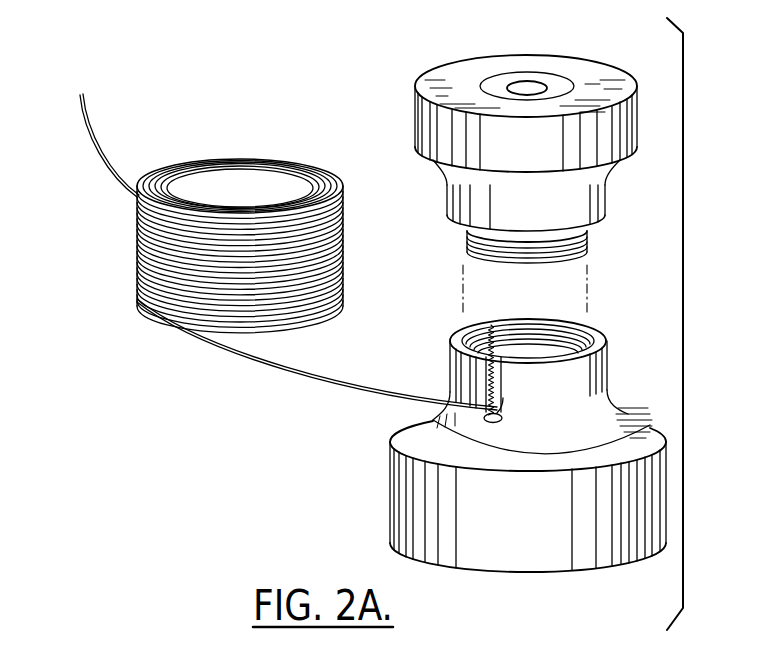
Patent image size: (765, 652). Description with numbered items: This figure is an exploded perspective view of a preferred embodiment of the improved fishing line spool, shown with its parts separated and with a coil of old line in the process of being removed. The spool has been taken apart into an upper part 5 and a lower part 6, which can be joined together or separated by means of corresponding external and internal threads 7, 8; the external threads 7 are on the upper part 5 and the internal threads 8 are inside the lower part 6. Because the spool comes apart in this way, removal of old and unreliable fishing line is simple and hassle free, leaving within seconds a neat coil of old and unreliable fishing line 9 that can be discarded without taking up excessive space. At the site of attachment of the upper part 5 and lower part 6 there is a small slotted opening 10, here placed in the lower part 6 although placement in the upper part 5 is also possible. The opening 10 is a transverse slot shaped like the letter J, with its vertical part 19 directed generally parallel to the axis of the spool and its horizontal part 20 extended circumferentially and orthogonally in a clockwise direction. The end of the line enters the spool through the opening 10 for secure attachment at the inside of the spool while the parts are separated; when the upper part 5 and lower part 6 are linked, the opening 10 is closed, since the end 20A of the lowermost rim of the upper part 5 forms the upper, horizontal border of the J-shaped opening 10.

The upper part 5 is at (585, 65).
The lower part 6 is at (640, 412).
The external threads 7 is at (587, 246).
The internal threads 8 is at (565, 340).
The coil of old fishing line 9 is at (285, 160).
The slotted opening 10 is at (505, 401).
The vertical part of J-shaped opening 19 is at (483, 383).
The horizontal part of J-shaped opening 20 is at (493, 421).
The end of lowermost rim of upper part 20A is at (503, 368).